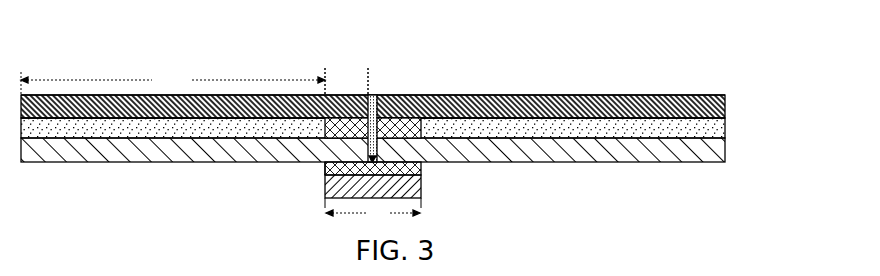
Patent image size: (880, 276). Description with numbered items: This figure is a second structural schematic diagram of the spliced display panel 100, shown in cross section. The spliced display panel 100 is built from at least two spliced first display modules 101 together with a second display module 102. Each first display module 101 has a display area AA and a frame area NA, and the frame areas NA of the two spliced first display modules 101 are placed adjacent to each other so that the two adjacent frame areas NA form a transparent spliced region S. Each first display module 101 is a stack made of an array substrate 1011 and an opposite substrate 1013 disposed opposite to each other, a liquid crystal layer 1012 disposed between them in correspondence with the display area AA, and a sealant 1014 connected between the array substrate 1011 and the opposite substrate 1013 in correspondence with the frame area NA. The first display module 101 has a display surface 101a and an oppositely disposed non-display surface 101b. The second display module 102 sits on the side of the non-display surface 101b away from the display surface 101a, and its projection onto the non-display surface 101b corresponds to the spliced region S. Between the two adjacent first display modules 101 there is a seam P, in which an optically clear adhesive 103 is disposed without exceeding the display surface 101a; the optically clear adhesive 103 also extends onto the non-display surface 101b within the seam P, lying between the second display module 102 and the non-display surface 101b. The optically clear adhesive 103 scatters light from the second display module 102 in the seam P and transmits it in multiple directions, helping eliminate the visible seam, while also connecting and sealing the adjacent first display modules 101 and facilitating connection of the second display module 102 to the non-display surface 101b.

The spliced display panel 100 is at (56, 41).
The first display module 101 is at (595, 53).
The array substrate 1011 is at (573, 137).
The liquid crystal layer 1012 is at (515, 120).
The opposite substrate 1013 is at (483, 110).
The sealant 1014 is at (407, 95).
The display surface 101a is at (714, 95).
The non-display surface 101b is at (714, 163).
The second display module 102 is at (424, 188).
The optically clear adhesive 103 is at (424, 168).
The seam P is at (325, 163).
The spliced region S is at (373, 211).
The display area AA is at (194, 81).
The frame area NA is at (346, 81).